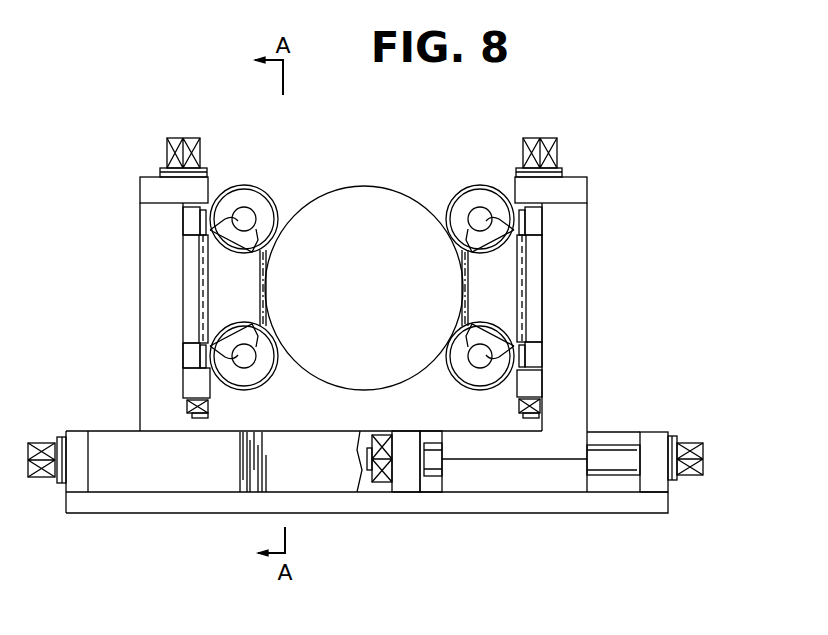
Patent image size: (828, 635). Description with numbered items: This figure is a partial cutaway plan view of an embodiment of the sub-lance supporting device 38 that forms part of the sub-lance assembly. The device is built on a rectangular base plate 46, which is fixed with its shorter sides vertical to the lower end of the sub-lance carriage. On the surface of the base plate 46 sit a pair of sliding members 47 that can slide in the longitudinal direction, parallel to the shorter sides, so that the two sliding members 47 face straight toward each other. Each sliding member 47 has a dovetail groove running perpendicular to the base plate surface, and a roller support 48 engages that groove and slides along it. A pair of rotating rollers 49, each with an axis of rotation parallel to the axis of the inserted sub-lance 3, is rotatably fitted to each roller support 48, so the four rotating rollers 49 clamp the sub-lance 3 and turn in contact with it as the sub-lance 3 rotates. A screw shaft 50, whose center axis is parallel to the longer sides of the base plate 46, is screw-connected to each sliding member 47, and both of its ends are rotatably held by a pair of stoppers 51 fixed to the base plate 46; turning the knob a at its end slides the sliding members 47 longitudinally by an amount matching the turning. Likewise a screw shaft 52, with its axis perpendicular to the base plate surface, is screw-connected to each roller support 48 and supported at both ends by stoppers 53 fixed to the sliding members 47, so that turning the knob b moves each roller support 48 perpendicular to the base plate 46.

The sub-lance 3 is at (368, 186).
The holding device 38 is at (579, 517).
The base plate 46 is at (511, 514).
The sliding member 47 is at (142, 313).
The roller support 48 is at (188, 290).
The rotating roller 49 is at (268, 187).
The screw shaft 50 is at (620, 448).
The stopper 51 is at (410, 490).
The screw shaft 52 is at (190, 217).
The stopper 53 is at (205, 186).
The knob a is at (45, 478).
The knob b is at (190, 138).